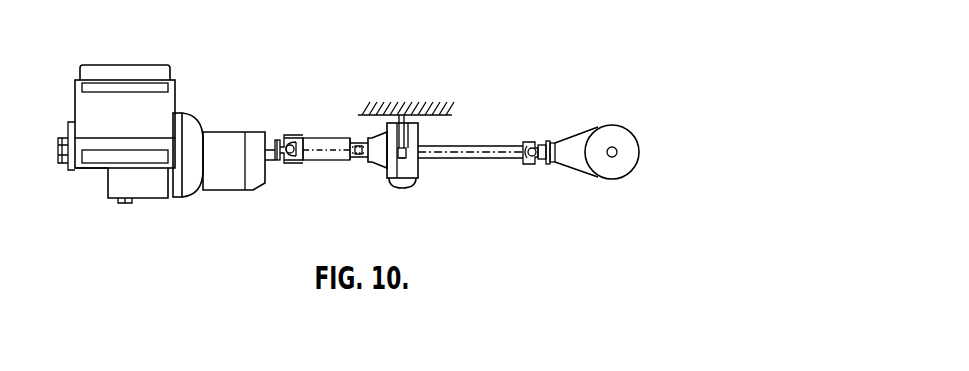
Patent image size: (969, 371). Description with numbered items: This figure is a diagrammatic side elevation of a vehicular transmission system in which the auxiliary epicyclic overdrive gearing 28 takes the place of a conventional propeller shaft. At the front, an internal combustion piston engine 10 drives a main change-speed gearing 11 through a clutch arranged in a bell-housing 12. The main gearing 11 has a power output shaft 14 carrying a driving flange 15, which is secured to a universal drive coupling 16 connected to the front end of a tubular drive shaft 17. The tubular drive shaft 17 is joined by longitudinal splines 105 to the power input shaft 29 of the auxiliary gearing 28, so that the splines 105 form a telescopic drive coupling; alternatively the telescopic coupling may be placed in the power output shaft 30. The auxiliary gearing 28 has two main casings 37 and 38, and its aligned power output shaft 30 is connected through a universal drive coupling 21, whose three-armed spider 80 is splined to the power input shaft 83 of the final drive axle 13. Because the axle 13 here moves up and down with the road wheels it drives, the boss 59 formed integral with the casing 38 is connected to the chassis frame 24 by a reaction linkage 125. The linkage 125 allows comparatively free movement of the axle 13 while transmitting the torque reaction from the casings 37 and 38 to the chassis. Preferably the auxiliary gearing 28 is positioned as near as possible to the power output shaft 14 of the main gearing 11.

The internal combustion piston engine 10 is at (132, 127).
The main change-speed gearing 11 is at (219, 165).
The bell-housing 12 is at (193, 125).
The final drive axle 13 is at (612, 134).
The power output shaft 14 is at (268, 161).
The driving flange 15 is at (274, 140).
The universal drive coupling 16 is at (290, 144).
The tubular drive shaft 17 is at (315, 140).
The universal drive coupling 21 is at (530, 145).
The chassis frame 24 is at (398, 110).
The auxiliary epicyclic overdrive gearing 28 is at (398, 192).
The power input shaft 29 is at (357, 157).
The power output shaft 30 is at (487, 159).
The casing 37 is at (392, 163).
The casing 38 is at (413, 125).
The boss 59 is at (406, 159).
The three-armed spider 80 is at (552, 161).
The power input shaft 83 is at (553, 144).
The longitudinal splines 105 is at (345, 140).
The reaction linkage 125 is at (406, 137).